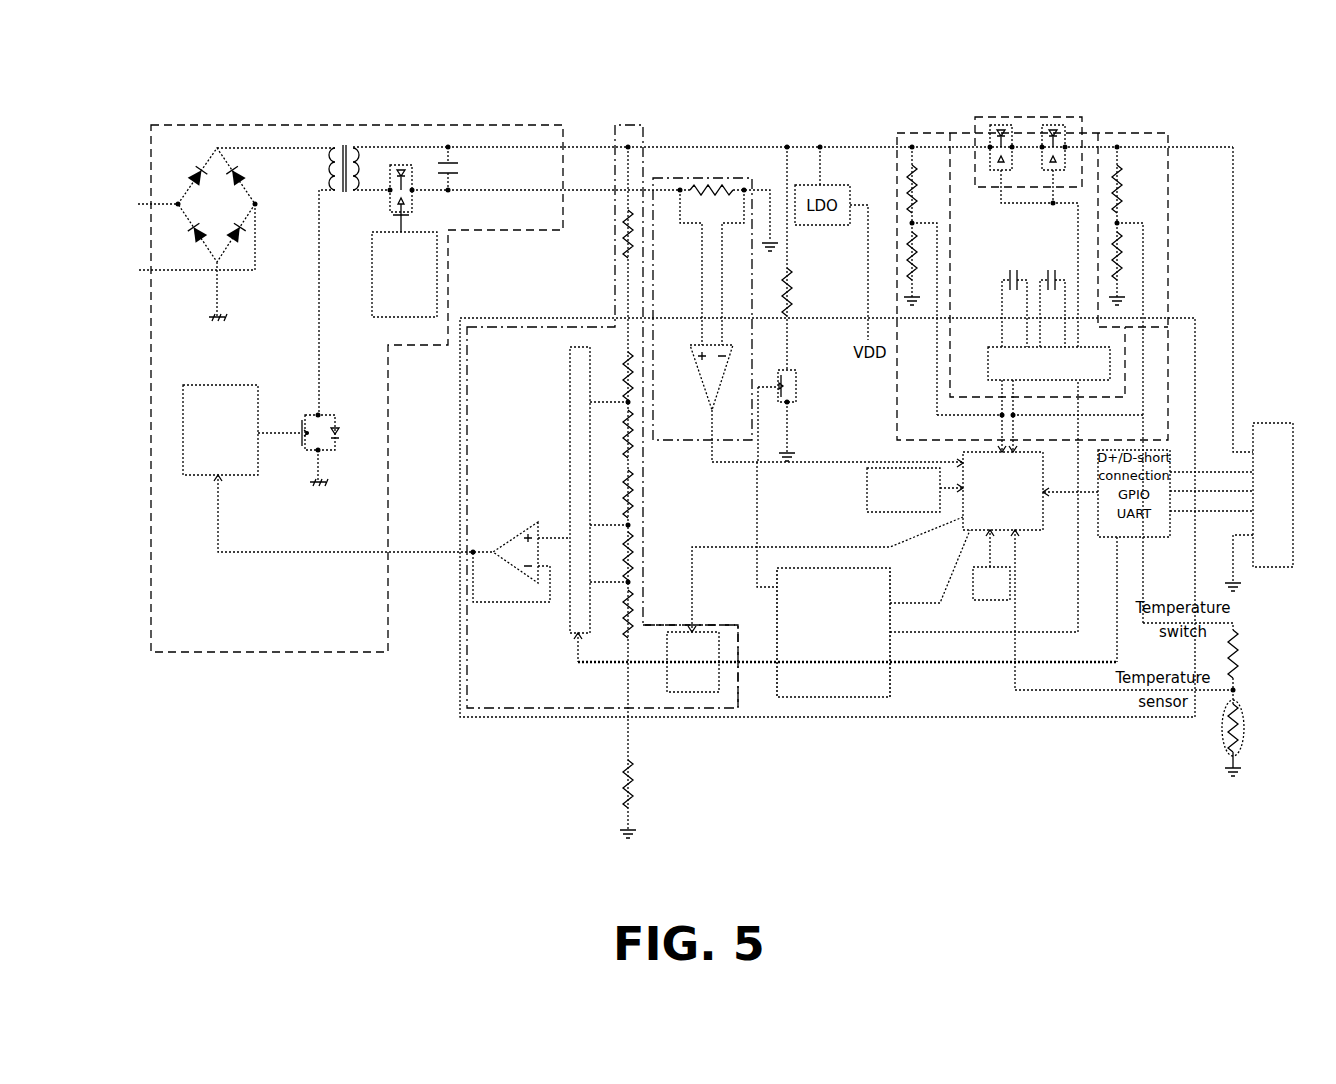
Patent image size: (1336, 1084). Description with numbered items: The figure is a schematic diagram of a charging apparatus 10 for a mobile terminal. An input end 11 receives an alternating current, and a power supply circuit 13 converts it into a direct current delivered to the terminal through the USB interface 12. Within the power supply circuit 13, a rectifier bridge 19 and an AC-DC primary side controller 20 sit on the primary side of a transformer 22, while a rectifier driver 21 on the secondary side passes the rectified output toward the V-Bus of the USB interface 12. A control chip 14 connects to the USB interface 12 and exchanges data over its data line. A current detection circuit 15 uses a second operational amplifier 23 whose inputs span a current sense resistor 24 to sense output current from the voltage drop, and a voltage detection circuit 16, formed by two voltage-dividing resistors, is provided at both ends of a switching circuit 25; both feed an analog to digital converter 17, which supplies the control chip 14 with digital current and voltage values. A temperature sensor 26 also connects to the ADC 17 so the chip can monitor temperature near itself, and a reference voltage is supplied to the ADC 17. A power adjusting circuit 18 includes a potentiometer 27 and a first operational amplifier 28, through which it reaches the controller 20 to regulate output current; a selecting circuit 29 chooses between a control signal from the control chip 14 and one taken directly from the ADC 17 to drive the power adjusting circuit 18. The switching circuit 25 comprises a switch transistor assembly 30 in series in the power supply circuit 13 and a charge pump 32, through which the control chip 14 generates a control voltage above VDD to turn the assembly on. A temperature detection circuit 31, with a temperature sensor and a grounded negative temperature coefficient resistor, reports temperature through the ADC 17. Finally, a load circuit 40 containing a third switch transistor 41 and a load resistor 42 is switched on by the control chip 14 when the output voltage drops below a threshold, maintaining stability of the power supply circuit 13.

The charging apparatus 10 is at (1225, 108).
The input end 11 is at (135, 270).
The USB interface 12 is at (1280, 423).
The power supply circuit 13 is at (295, 125).
The control chip 14 is at (830, 697).
The current detection circuit 15 is at (690, 440).
The voltage detection circuit 16 is at (935, 140).
The analog to digital converter 17 is at (1045, 512).
The power adjusting circuit 18 is at (745, 672).
The rectifier bridge 19 is at (204, 176).
The AC-DC primary side controller 20 is at (183, 425).
The rectifier driver 21 is at (372, 290).
The transformer 22 is at (340, 148).
The second operational amplifier 23 is at (702, 355).
The current sense resistor 24 is at (712, 185).
The switching circuit 25 is at (1035, 118).
The temperature sensor 26 is at (867, 488).
The potentiometer 27 is at (570, 447).
The first operational amplifier 28 is at (520, 538).
The selecting circuit 29 is at (688, 692).
The switch transistor assembly 30 is at (1065, 118).
The temperature detection circuit 31 is at (1248, 730).
The charge pump 32 is at (995, 345).
The load circuit 40 is at (787, 165).
The third switch transistor 41 is at (800, 375).
The load resistor 42 is at (805, 290).